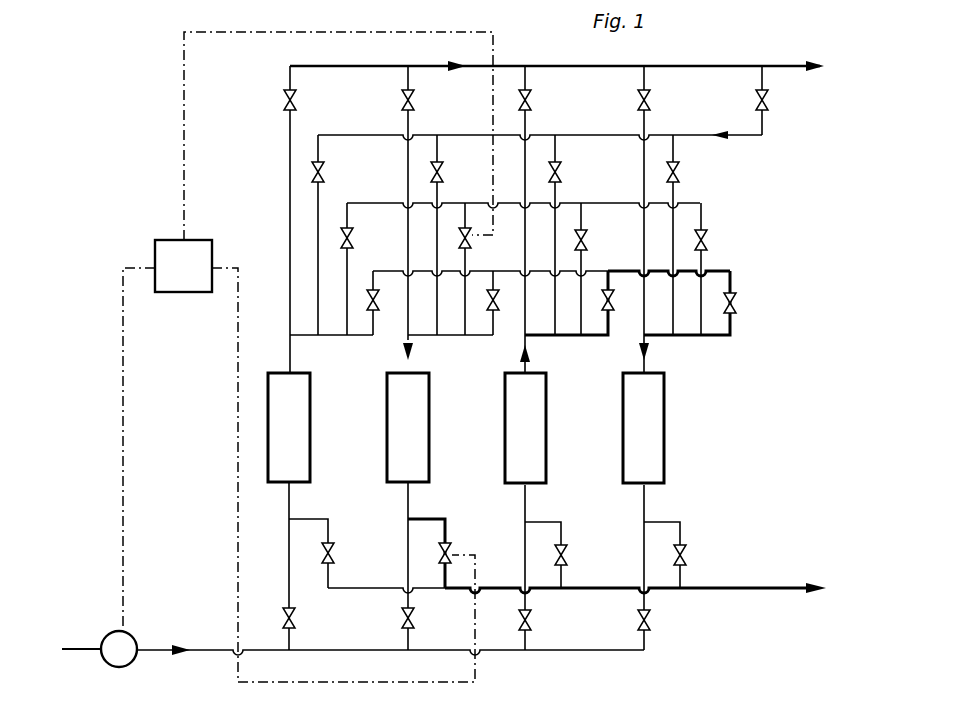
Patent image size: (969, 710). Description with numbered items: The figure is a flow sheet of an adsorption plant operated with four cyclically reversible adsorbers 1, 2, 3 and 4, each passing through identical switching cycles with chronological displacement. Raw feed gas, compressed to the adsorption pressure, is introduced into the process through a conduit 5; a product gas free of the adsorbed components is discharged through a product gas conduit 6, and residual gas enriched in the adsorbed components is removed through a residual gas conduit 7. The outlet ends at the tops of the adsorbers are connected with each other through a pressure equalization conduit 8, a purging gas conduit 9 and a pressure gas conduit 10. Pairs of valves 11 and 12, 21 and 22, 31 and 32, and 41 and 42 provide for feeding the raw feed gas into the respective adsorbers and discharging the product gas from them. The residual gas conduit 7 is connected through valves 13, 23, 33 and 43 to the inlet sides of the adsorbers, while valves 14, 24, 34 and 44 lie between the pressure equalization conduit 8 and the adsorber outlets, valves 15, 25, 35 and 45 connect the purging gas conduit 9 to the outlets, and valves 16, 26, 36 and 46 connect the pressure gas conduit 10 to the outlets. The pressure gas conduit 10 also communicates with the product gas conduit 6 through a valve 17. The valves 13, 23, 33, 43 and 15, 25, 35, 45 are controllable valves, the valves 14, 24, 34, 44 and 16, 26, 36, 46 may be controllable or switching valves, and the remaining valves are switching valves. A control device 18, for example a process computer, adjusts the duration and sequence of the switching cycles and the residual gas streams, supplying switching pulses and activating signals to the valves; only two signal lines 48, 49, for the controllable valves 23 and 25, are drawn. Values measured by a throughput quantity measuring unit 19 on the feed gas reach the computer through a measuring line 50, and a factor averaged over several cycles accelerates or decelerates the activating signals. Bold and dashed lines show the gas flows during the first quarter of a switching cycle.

The adsorber 1 is at (310, 432).
The adsorber 2 is at (429, 432).
The adsorber 3 is at (546, 432).
The adsorber 4 is at (664, 432).
The conduit 5 is at (86, 649).
The product gas conduit 6 is at (784, 66).
The residual gas conduit 7 is at (786, 588).
The pressure equalization conduit 8 is at (612, 271).
The purging gas conduit 9 is at (603, 203).
The pressure gas conduit 10 is at (580, 135).
The valve 11 is at (281, 620).
The valve 12 is at (283, 100).
The valve 13 is at (335, 555).
The valve 14 is at (380, 304).
The valve 15 is at (354, 240).
The valve 16 is at (325, 172).
The valve 17 is at (769, 100).
The control device 18 is at (185, 292).
The throughput quantity measuring unit 19 is at (134, 637).
The valve 21 is at (400, 619).
The valve 22 is at (401, 100).
The valve 23 is at (452, 548).
The valve 24 is at (500, 305).
The valve 25 is at (472, 242).
The valve 26 is at (444, 172).
The valve 31 is at (533, 622).
The valve 32 is at (532, 100).
The valve 33 is at (568, 557).
The valve 34 is at (615, 305).
The valve 35 is at (588, 244).
The valve 36 is at (562, 172).
The valve 41 is at (652, 622).
The valve 42 is at (651, 100).
The valve 43 is at (687, 557).
The valve 44 is at (737, 306).
The valve 45 is at (708, 244).
The valve 46 is at (680, 172).
The signal line 48 is at (238, 447).
The signal line 49 is at (184, 52).
The measuring line 50 is at (123, 383).